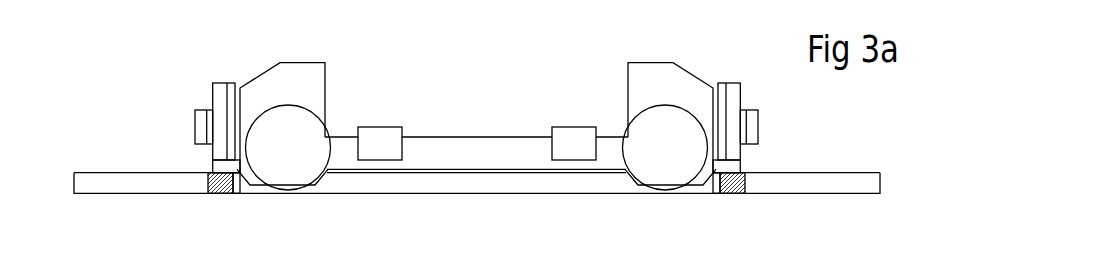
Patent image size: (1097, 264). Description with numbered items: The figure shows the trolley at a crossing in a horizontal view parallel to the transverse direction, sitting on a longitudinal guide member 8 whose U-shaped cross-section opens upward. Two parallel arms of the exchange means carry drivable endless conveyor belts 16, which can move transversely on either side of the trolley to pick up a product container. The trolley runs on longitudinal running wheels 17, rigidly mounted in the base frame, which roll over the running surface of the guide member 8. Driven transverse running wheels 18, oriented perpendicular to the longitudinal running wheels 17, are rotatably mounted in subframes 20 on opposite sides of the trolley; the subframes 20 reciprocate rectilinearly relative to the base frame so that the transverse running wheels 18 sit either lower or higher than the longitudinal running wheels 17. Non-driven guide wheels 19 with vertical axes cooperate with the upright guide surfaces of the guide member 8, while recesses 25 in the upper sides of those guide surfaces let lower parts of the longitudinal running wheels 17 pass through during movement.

The longitudinal guide member 8 is at (498, 182).
The endless conveyor belt 16 is at (385, 137).
The longitudinal running wheel 17 is at (285, 163).
The transverse running wheel 18 is at (227, 94).
The guide wheel 19 is at (227, 190).
The subframe 20 is at (197, 121).
The recess 25 is at (318, 183).